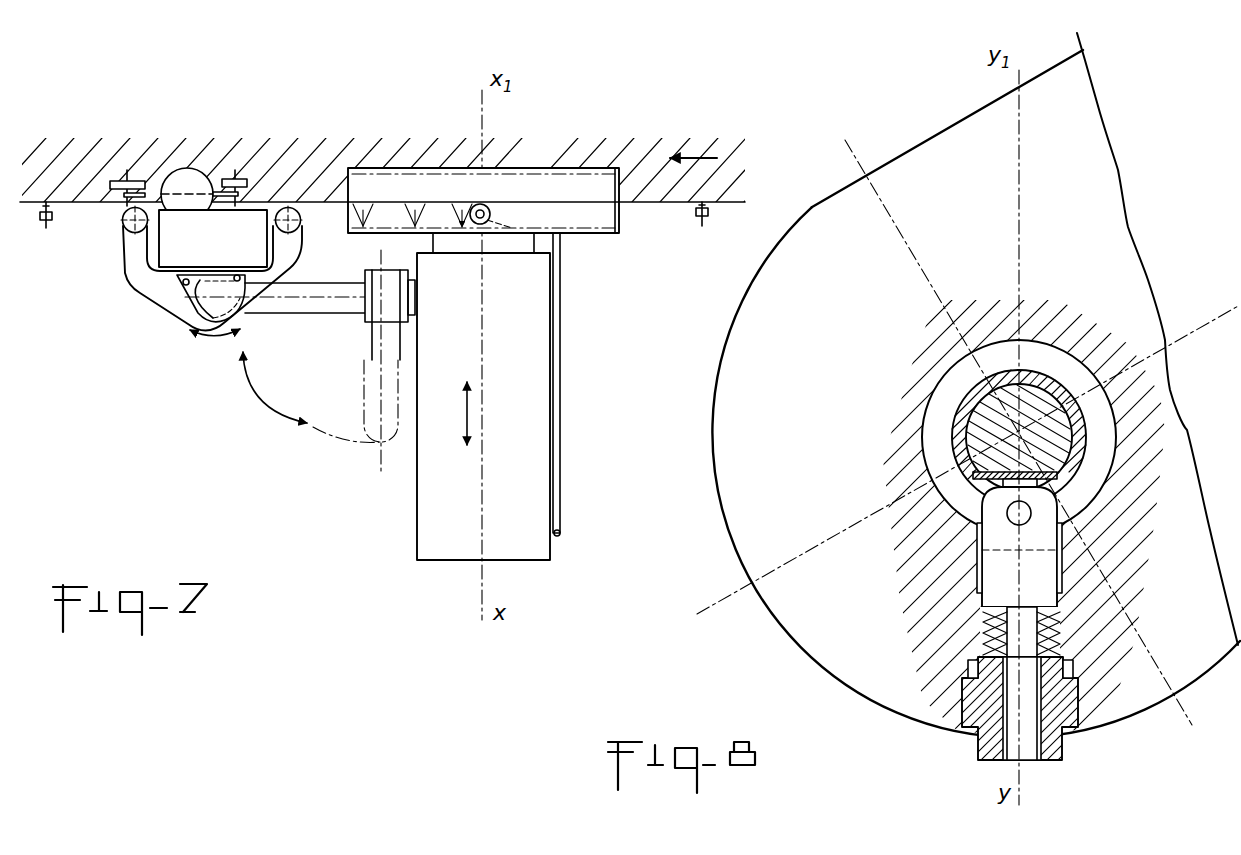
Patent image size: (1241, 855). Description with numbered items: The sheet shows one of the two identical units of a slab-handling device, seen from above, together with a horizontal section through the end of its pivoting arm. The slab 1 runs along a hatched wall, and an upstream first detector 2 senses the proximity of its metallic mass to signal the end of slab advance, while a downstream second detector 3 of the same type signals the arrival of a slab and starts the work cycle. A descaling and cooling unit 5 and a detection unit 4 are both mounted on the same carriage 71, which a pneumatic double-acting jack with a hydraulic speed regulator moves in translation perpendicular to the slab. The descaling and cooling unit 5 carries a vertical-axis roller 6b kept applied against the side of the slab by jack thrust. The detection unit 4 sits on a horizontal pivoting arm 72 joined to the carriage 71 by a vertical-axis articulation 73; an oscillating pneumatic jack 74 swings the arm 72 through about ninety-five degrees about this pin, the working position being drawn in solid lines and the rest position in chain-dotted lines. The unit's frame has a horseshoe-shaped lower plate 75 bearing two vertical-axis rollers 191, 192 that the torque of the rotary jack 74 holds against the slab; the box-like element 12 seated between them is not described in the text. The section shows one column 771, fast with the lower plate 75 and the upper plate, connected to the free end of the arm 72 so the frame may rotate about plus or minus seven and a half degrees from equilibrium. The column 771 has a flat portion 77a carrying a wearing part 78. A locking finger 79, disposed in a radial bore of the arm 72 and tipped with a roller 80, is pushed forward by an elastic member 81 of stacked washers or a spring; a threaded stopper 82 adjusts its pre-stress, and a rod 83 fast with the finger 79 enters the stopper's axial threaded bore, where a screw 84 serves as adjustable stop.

In FIG. 7, the machine frame / ceiling body 1 is at (690, 176).
In FIG. 7, the first detector 2 is at (701, 229).
In FIG. 7, the second detector 3 is at (42, 232).
In FIG. 7, the detection unit 4 is at (116, 292).
In FIG. 7, the descaling and cooling unit 5 is at (592, 241).
In FIG. 7, the vertical-axis roller 6b is at (487, 205).
In FIG. 7, the spray head housing 12 is at (223, 250).
In FIG. 7, the vertical-axis roller 191 is at (303, 222).
In FIG. 7, the vertical-axis roller 192 is at (123, 222).
In FIG. 7, the carriage 71 is at (518, 442).
In FIG. 7, the pivoting arm 72 is at (303, 305).
In FIG. 8, the pivoting arm 72 is at (1192, 602).
In FIG. 7, the articulation 73 is at (365, 310).
In FIG. 7, the oscillating pneumatic jack 74 is at (397, 276).
In FIG. 7, the lower plate 75 is at (151, 287).
In FIG. 8, the flat portion 77a is at (952, 430).
In FIG. 8, the column 771 is at (1053, 457).
In FIG. 8, the wearing part 78 is at (970, 477).
In FIG. 8, the locking finger 79 is at (1000, 580).
In FIG. 8, the roller 80 is at (1057, 527).
In FIG. 8, the elastic member 81 is at (1053, 630).
In FIG. 8, the threaded stopper 82 is at (1080, 728).
In FIG. 8, the rod 83 is at (985, 637).
In FIG. 8, the screw 84 is at (1027, 733).